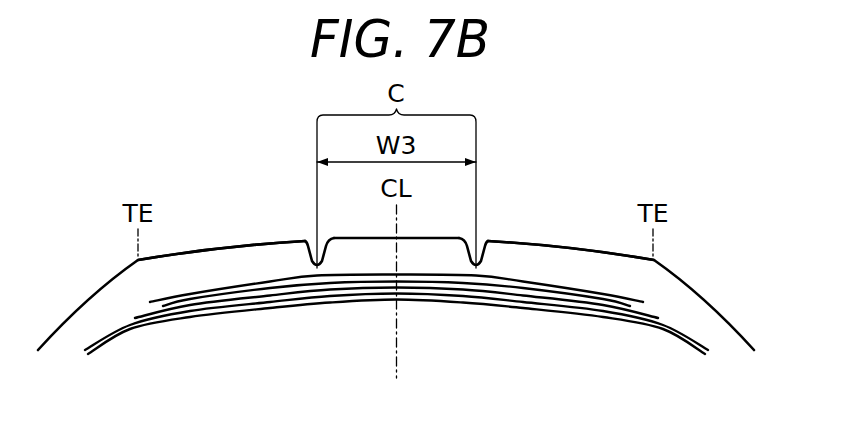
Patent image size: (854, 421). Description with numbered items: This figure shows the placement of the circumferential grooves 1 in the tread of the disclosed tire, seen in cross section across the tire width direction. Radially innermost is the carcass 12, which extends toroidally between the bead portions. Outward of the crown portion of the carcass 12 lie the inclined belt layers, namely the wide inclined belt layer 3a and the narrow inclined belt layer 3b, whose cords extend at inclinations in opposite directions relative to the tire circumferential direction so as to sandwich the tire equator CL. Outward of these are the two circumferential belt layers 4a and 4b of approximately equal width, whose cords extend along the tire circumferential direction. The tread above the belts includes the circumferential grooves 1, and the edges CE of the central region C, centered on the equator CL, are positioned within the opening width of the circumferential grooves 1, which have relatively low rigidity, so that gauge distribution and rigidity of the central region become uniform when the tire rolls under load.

The circumferential groove 1 is at (312, 239).
The wide inclined belt layer 3a is at (225, 306).
The narrow inclined belt layer 3b is at (588, 302).
The circumferential belt layer 4a is at (224, 290).
The circumferential belt layer 4b is at (572, 290).
The carcass 12 is at (350, 299).